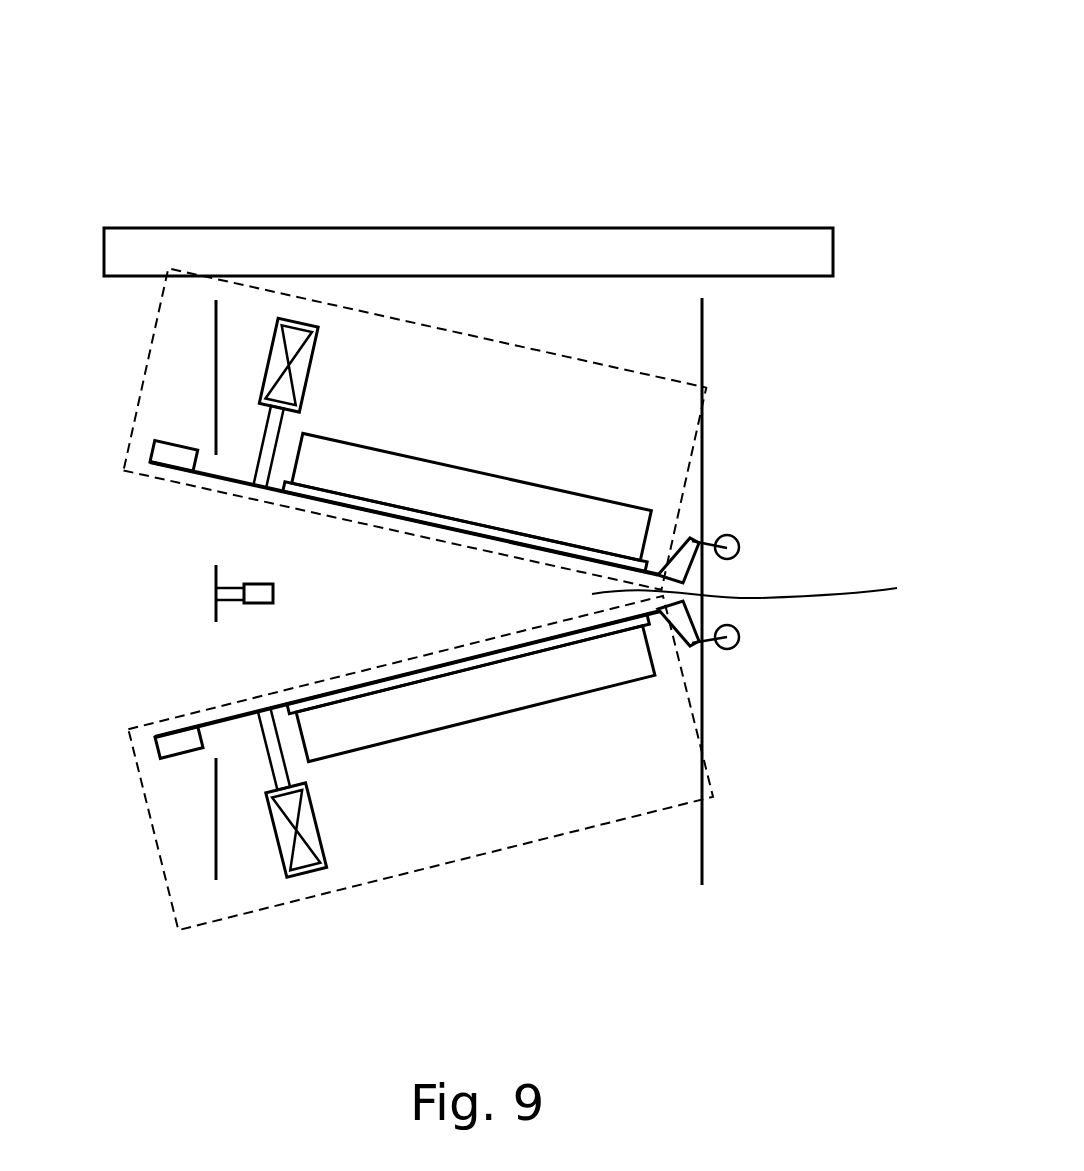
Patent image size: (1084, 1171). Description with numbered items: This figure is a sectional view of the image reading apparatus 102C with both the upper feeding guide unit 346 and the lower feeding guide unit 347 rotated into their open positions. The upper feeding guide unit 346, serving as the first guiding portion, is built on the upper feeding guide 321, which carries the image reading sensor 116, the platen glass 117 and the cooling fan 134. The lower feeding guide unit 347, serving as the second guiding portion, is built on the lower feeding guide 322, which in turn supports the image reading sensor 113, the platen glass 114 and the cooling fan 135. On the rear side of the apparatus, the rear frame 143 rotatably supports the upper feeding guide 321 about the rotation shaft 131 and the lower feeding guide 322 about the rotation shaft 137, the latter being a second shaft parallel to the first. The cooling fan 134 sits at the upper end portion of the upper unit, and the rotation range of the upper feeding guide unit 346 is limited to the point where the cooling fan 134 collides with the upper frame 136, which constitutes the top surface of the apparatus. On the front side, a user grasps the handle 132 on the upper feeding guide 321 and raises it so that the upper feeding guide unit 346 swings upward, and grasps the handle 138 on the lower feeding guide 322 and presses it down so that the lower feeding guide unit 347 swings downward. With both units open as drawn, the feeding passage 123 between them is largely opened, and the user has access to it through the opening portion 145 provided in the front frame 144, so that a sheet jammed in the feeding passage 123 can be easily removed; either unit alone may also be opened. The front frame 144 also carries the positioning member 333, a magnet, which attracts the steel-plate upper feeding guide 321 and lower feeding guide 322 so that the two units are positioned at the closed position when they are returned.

The image reading apparatus 102C is at (478, 123).
The upper frame 136 is at (303, 228).
The cooling fan 134 is at (300, 367).
The cooling fan 135 is at (283, 837).
The upper feeding guide unit 346 is at (523, 337).
The lower feeding guide unit 347 is at (644, 828).
The front frame 144 is at (215, 356).
The rear frame 143 is at (703, 460).
The handle 132 is at (160, 451).
The handle 138 is at (160, 748).
The image reading sensor 116 is at (422, 483).
The platen glass 117 is at (540, 542).
The image reading sensor 113 is at (437, 717).
The platen glass 114 is at (555, 643).
The upper feeding guide 321 is at (658, 575).
The lower feeding guide 322 is at (662, 620).
The rotation shaft 131 is at (740, 548).
The rotation shaft 137 is at (740, 637).
The feeding passage 123 is at (773, 575).
The opening portion 145 is at (212, 594).
The positioning member 333 is at (297, 593).